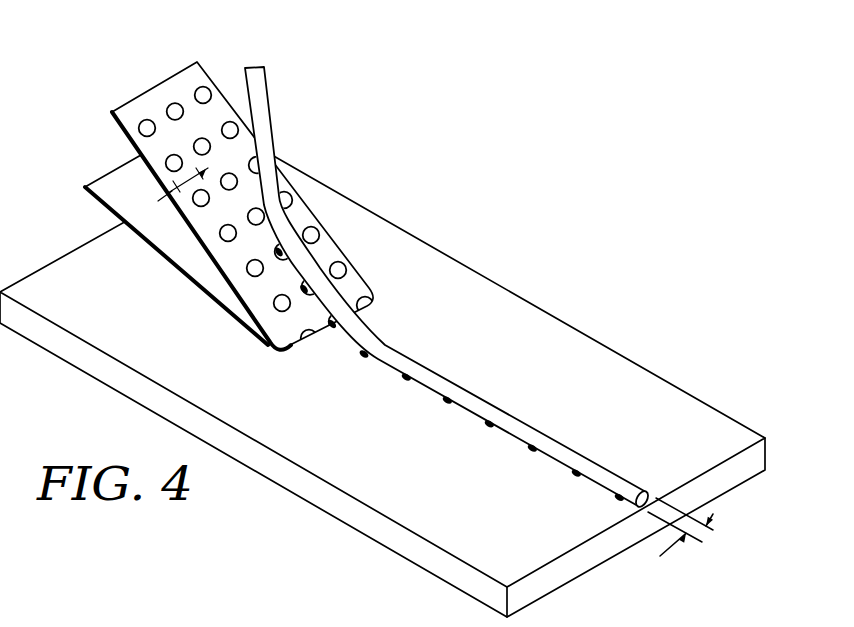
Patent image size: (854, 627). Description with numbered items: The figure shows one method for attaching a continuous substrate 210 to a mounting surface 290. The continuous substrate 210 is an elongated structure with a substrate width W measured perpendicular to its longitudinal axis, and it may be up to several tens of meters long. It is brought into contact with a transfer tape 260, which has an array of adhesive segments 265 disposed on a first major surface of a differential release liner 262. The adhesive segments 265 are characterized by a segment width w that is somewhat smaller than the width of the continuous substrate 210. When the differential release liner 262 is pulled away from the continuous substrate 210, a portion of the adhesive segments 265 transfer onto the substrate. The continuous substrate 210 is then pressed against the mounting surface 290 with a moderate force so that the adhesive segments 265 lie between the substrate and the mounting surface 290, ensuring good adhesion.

The transfer tape 260 is at (225, 176).
The differential release liner 262 is at (177, 86).
The adhesive segments 265 is at (206, 93).
The mounting surface 290 is at (602, 377).
The continuous substrate 210 is at (608, 473).